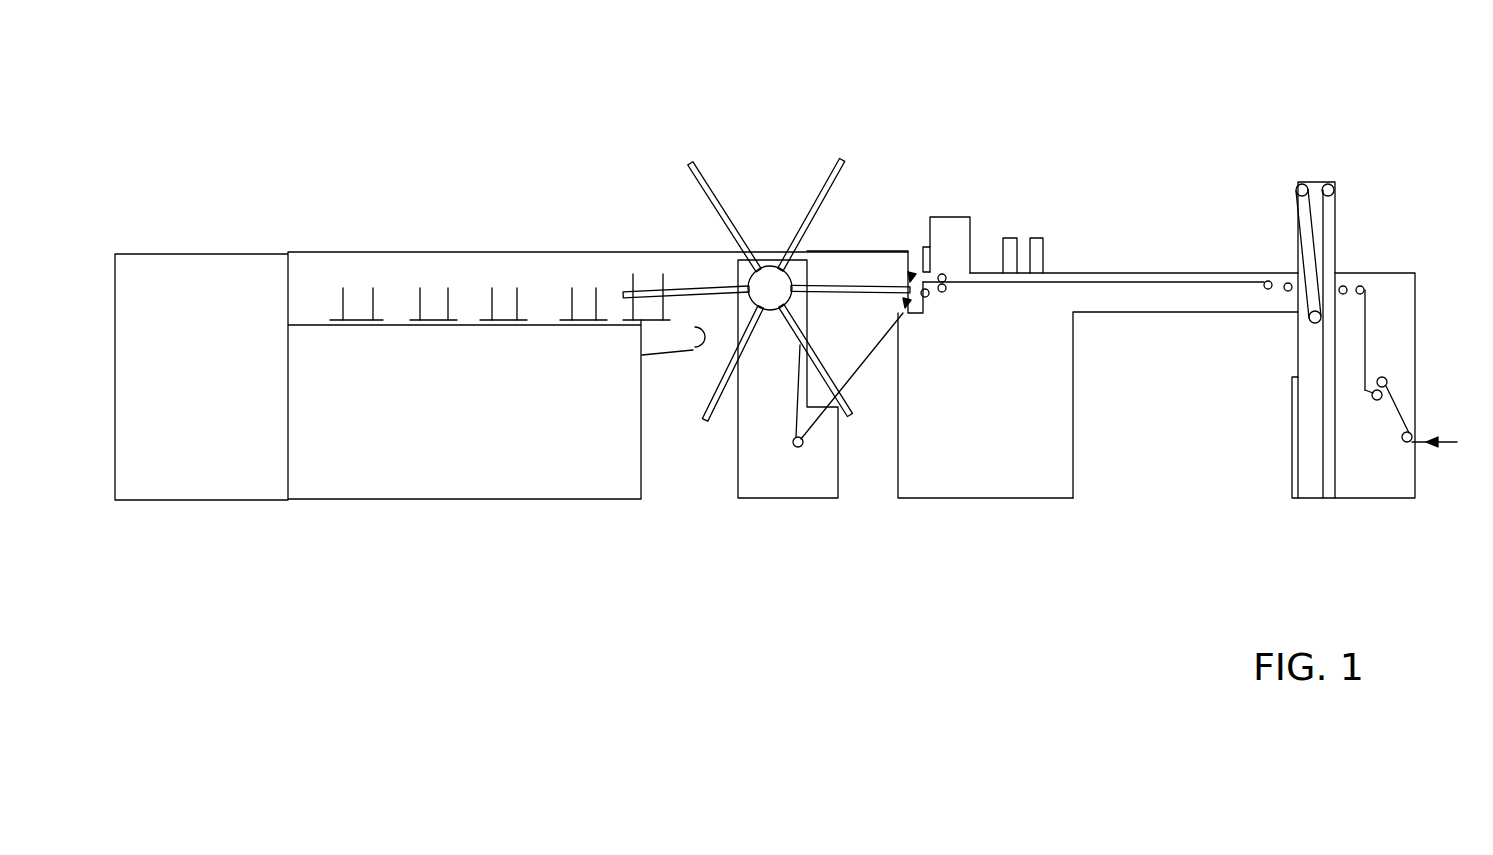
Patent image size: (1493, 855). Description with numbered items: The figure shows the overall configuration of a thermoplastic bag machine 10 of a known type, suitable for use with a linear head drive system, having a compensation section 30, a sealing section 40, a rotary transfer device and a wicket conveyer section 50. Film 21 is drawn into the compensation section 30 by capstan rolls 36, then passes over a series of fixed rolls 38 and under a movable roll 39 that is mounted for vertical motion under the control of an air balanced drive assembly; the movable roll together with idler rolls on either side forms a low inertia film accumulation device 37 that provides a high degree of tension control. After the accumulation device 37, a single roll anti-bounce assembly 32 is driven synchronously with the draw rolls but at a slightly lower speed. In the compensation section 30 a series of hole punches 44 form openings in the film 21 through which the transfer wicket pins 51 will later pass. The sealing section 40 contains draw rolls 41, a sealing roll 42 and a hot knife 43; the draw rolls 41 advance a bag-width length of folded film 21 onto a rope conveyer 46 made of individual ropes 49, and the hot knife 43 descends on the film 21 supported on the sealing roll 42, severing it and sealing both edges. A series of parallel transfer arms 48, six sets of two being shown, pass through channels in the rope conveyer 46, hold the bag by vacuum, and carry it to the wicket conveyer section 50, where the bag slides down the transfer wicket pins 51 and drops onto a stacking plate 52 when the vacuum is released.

The bag machine 10 is at (911, 42).
The film 21 is at (1452, 442).
The compensation section 30 is at (1244, 306).
The anti-bounce assembly 32 is at (1262, 275).
The capstan rolls 36 is at (1388, 381).
The film accumulation device 37 is at (1292, 255).
The fixed rolls 38 is at (1298, 185).
The movable roll 39 is at (1311, 320).
The sealing section 40 is at (940, 306).
The draw rolls 41 is at (942, 274).
The sealing roll 42 is at (928, 297).
The hot knife 43 is at (925, 265).
The hole punches 44 is at (1008, 238).
The rope conveyer 46 is at (835, 331).
The transfer arms 48 is at (826, 180).
The ropes 49 is at (866, 363).
The wicket conveyer section 50 is at (511, 314).
The transfer wicket pins 51 is at (490, 300).
The stacking plate 52 is at (432, 320).